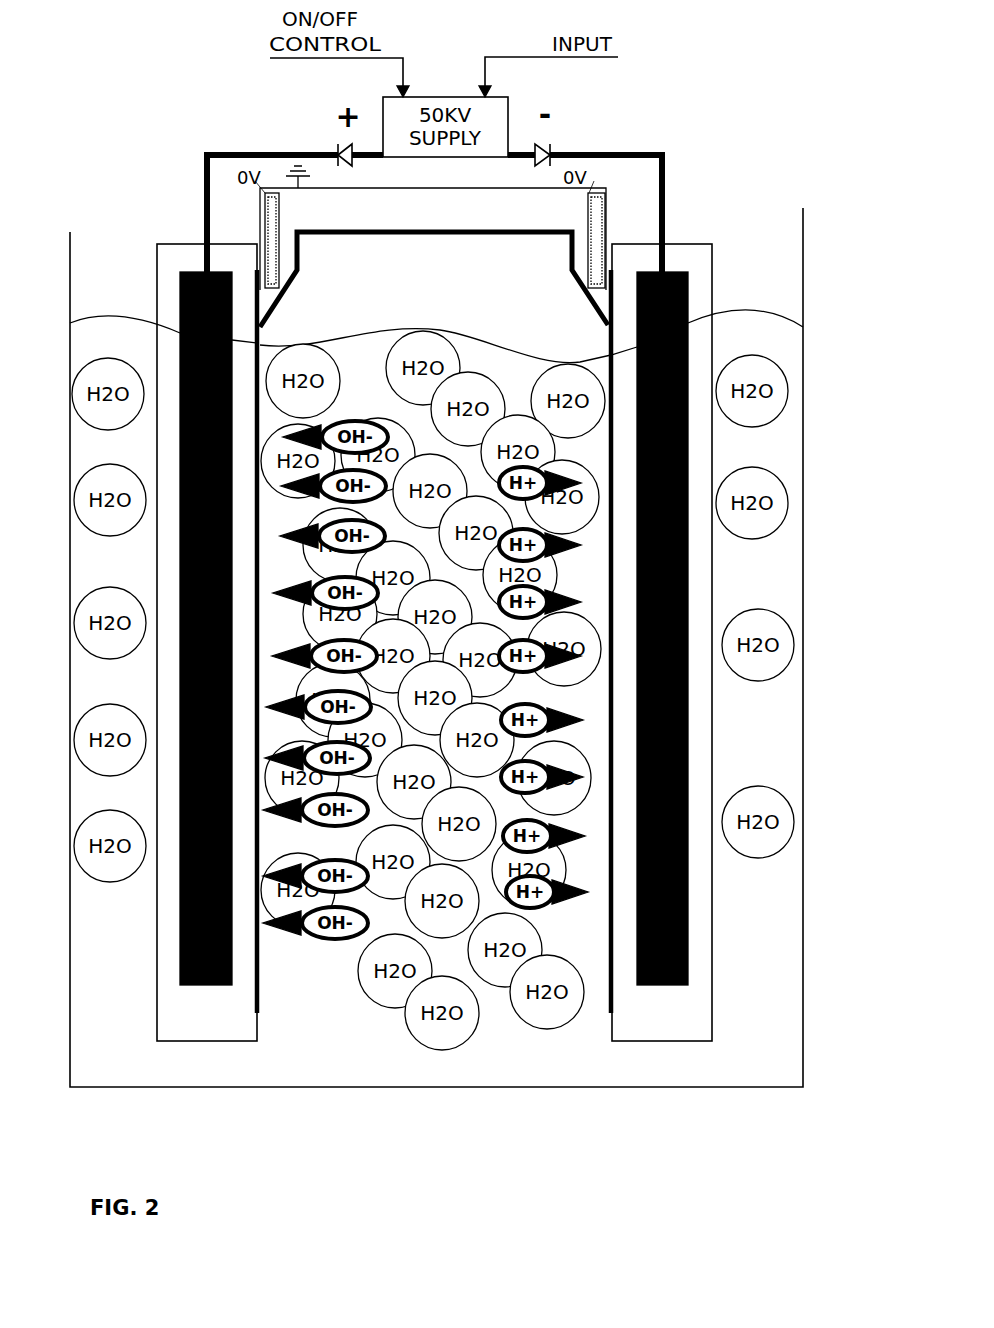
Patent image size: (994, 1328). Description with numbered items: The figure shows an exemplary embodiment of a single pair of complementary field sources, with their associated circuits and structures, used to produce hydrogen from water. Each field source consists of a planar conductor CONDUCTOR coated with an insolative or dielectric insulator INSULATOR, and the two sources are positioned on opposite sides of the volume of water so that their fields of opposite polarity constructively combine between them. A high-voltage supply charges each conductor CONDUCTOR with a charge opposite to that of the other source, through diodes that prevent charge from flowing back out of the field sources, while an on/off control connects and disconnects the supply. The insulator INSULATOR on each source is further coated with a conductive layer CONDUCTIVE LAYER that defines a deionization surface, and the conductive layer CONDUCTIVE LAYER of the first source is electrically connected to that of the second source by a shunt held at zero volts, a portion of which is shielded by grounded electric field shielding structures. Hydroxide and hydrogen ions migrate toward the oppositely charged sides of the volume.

The conductor CONDUCTOR is at (180, 287).
The insulator INSULATOR is at (687, 260).
The conductive layer CONDUCTIVE LAYER is at (611, 1015).